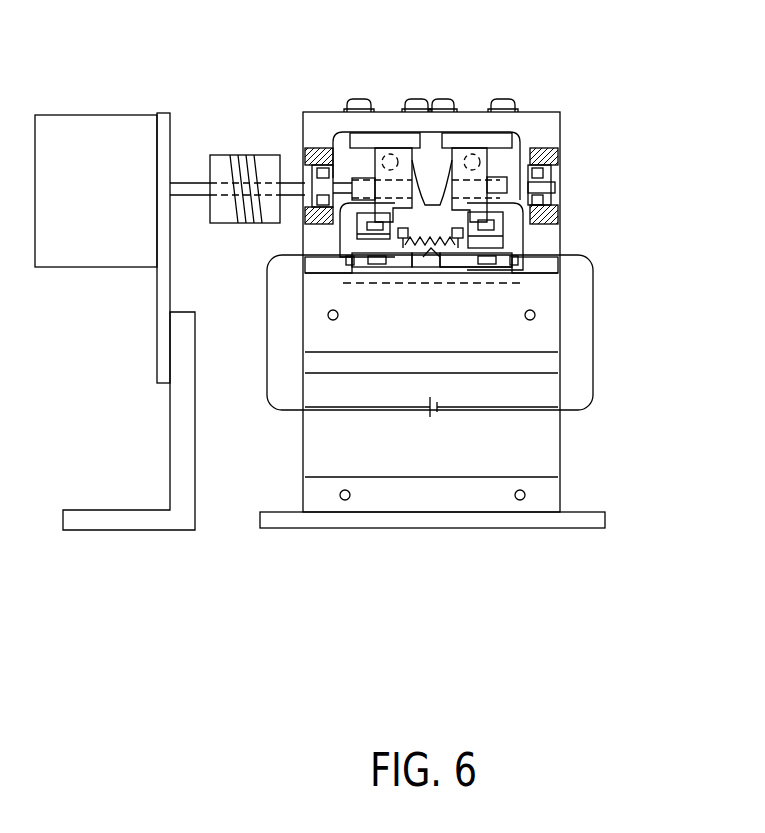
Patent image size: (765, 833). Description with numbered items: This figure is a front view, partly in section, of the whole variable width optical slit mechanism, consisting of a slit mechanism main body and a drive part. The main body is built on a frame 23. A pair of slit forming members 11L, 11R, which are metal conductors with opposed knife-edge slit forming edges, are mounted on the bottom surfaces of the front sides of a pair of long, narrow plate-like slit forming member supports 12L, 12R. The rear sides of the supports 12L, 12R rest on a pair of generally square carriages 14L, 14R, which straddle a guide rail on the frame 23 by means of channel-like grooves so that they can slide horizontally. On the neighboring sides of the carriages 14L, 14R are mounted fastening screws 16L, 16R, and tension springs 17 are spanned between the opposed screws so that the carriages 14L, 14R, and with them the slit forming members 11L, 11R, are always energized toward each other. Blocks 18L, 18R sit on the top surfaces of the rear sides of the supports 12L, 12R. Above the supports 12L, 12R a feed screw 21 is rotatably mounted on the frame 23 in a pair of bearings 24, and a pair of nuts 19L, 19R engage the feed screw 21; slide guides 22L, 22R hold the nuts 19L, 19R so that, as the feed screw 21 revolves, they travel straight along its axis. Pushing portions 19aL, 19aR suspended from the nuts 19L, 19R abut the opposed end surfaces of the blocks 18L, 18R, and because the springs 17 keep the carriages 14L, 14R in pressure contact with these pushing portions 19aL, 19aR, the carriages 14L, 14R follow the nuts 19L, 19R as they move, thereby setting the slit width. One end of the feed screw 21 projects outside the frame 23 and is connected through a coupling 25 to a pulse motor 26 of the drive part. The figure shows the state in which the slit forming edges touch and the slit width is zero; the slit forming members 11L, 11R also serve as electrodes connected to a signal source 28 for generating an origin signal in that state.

The slit forming member 11L is at (395, 258).
The slit forming member 11R is at (455, 262).
The slit forming member support 12L is at (340, 244).
The slit forming member support 12R is at (520, 242).
The carriage 14L is at (363, 248).
The carriage 14R is at (468, 262).
The fastening screw 16L is at (410, 277).
The fastening screw 16R is at (508, 247).
The tension spring 17 is at (453, 262).
The block 18L is at (357, 220).
The block 18R is at (505, 225).
The nut 19L is at (372, 173).
The nut 19R is at (500, 157).
The pushing portion 19aL is at (425, 178).
The pushing portion 19aR is at (440, 180).
The feed screw 21 is at (300, 180).
The slide guide 22L is at (385, 147).
The slide guide 22R is at (528, 138).
The frame 23 is at (562, 143).
The bearing 24 is at (550, 175).
The coupling 25 is at (212, 155).
The pulse motor 26 is at (90, 267).
The signal source 28 is at (437, 418).